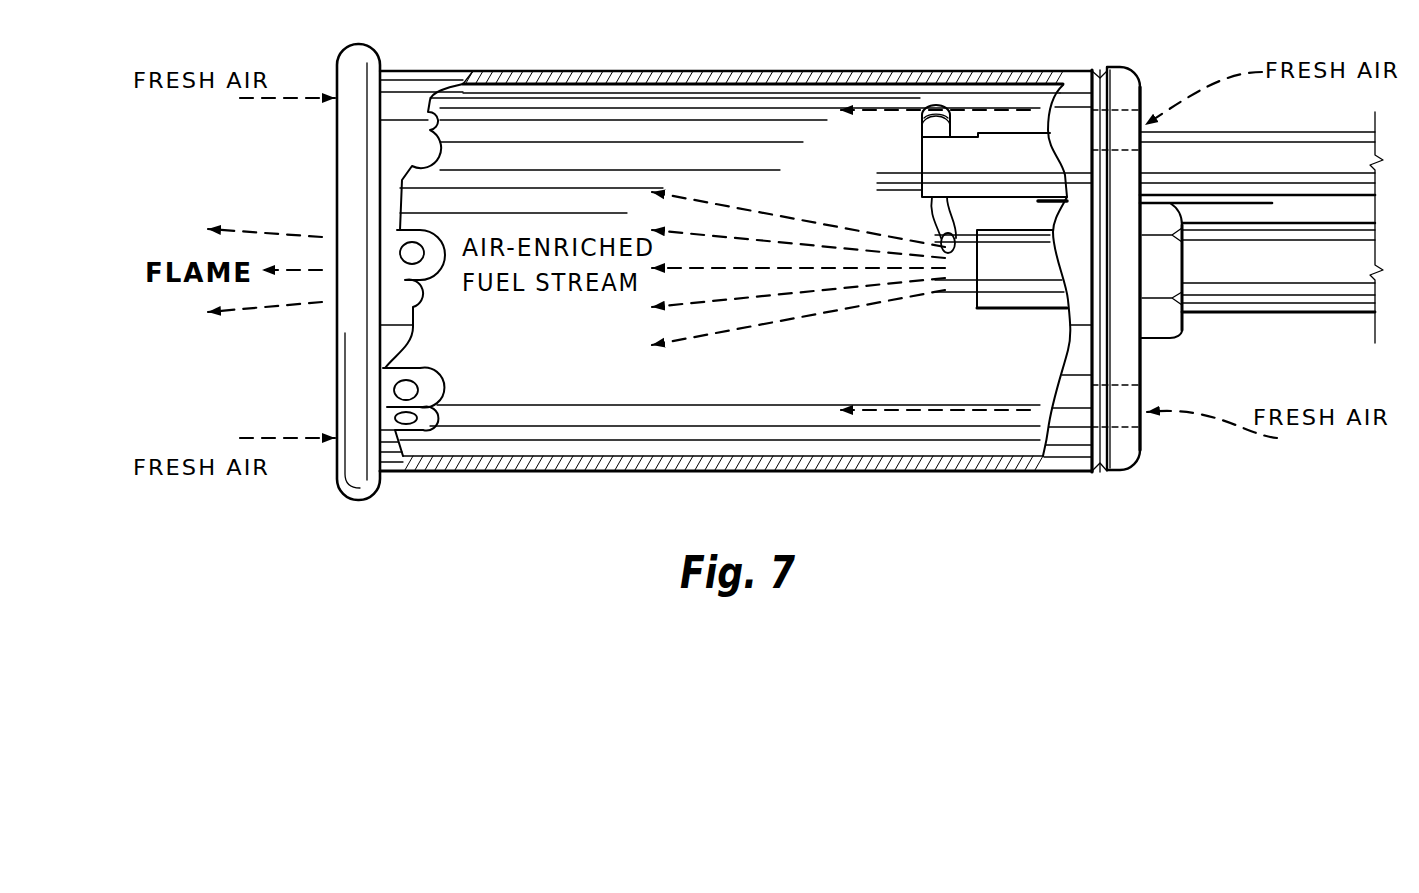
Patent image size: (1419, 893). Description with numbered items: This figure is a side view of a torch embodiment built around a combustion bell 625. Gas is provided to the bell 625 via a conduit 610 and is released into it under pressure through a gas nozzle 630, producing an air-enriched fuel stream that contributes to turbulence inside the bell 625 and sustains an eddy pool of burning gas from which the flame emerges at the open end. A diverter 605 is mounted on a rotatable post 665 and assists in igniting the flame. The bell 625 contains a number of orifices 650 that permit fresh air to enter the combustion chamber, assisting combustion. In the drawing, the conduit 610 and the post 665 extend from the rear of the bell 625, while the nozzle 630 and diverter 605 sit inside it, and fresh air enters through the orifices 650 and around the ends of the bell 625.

The diverter 605 is at (925, 127).
The conduit 610 is at (1253, 305).
The bell 625 is at (680, 470).
The gas nozzle 630 is at (1015, 297).
The orifices 650 is at (1141, 110).
The rotatable post 665 is at (1013, 155).